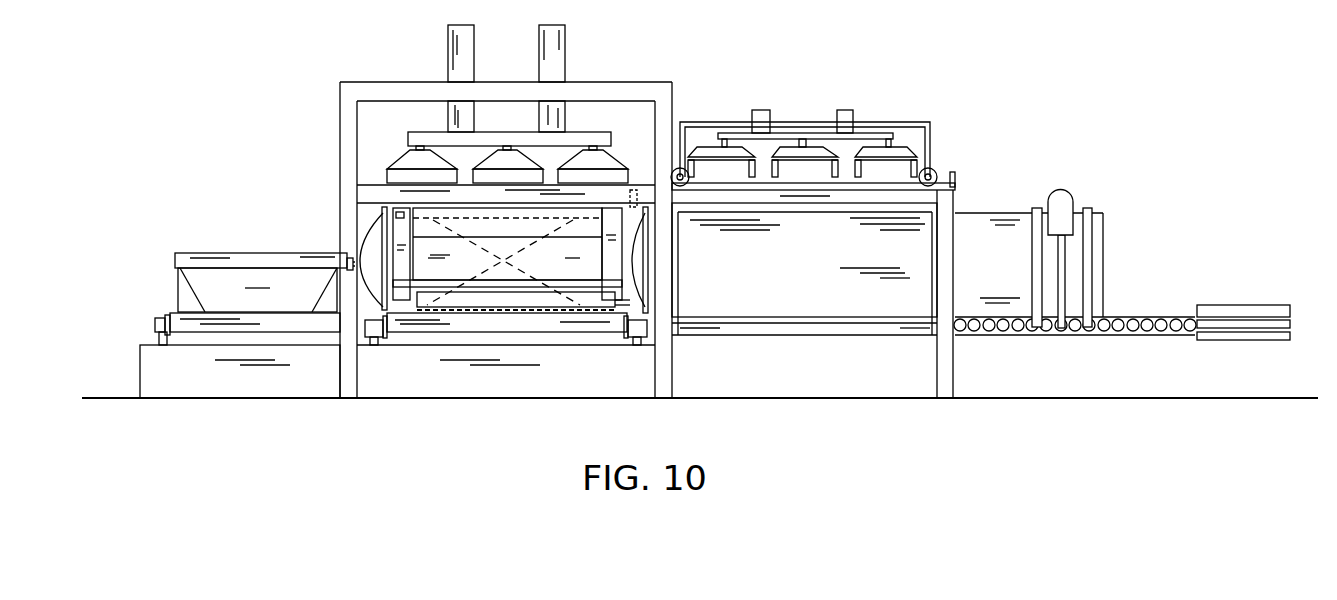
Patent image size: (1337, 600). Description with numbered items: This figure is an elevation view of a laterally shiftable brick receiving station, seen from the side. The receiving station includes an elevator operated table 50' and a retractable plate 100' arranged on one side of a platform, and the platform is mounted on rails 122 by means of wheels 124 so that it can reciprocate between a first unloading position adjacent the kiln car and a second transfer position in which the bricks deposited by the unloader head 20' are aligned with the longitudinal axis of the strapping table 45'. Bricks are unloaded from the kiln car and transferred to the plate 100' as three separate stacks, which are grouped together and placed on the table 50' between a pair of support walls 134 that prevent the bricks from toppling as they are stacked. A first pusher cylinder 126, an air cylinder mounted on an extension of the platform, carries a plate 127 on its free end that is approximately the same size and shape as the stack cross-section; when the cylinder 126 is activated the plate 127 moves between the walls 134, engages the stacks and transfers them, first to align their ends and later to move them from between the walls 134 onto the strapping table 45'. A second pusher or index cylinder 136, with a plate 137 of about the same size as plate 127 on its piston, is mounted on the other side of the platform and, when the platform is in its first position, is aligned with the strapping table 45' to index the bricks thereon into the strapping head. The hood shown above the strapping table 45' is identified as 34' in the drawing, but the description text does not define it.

The unloader head 20' is at (507, 104).
The retractable plate 100' is at (631, 166).
The heater hood assembly 34' is at (813, 125).
The support walls 134 is at (405, 231).
The plate 127 is at (383, 260).
The plate 137 is at (649, 262).
The elevator operated table 50' is at (507, 256).
The index cylinder 136 is at (510, 297).
The first pusher cylinder 126 is at (225, 258).
The wheels 124 is at (165, 320).
The rails 122 is at (160, 336).
The strapping table 45' is at (1122, 265).